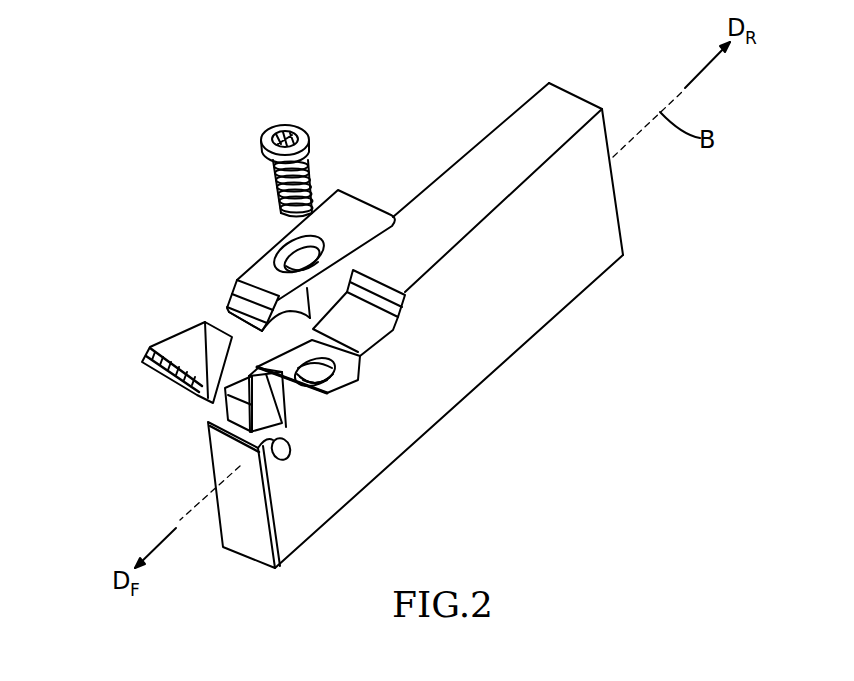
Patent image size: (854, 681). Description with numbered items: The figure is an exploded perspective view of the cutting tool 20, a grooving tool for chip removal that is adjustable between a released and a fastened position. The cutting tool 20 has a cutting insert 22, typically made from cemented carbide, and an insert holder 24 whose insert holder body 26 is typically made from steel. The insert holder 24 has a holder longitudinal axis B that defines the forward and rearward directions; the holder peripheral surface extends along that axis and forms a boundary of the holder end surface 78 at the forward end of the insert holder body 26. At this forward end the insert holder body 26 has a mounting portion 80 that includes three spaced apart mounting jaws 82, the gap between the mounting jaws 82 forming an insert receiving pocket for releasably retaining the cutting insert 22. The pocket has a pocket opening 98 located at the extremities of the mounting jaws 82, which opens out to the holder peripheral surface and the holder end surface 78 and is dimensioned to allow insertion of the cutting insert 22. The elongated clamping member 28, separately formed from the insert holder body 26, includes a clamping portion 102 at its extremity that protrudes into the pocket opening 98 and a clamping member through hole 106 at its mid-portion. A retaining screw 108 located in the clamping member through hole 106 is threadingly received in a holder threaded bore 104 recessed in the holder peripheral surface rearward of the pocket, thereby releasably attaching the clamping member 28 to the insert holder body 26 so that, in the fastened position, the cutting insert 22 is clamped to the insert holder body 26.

The cutting tool 20 is at (142, 167).
The cutting insert 22 is at (152, 340).
The insert holder 24 is at (406, 350).
The insert holder body 26 is at (567, 223).
The clamping member 28 is at (348, 203).
The holder end surface 78 is at (245, 505).
The mounting portion 80 is at (312, 437).
The mounting jaws 82 is at (243, 392).
The pocket opening 98 is at (245, 407).
The clamping portion 102 is at (230, 318).
The holder threaded bore 104 is at (337, 374).
The clamping member through hole 106 is at (279, 257).
The retaining screw 108 is at (299, 114).